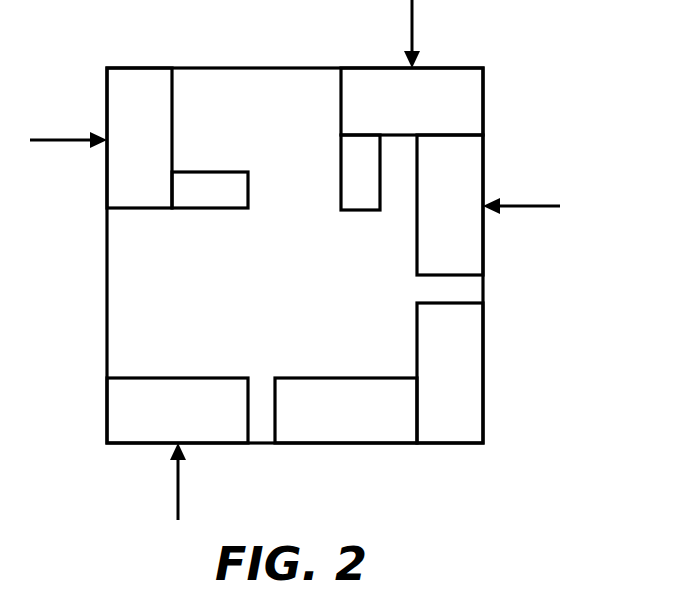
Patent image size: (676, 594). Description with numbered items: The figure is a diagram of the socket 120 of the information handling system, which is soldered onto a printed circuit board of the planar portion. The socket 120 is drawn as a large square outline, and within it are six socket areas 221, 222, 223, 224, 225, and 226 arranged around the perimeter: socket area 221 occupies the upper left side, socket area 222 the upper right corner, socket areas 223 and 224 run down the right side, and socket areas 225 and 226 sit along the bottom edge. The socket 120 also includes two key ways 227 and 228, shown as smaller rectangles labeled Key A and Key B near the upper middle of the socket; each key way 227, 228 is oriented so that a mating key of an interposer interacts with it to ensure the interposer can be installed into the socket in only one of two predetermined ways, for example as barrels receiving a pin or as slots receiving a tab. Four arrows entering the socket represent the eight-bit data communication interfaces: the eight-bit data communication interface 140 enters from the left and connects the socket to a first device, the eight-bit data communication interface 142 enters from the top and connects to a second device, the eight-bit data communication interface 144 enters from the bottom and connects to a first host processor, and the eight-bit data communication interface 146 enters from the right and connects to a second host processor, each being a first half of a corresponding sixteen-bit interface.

The socket 120 is at (281, 275).
The socket area 221 is at (139, 138).
The socket area 222 is at (396, 131).
The socket area 223 is at (450, 205).
The socket area 224 is at (450, 373).
The socket area 225 is at (330, 440).
The socket area 226 is at (162, 440).
The key way 227 is at (228, 172).
The key way 228 is at (341, 148).
The 8-bit data communication interface 140 is at (68, 130).
The 8-bit data communication interface 142 is at (430, 34).
The 8-bit data communication interface 144 is at (160, 481).
The 8-bit data communication interface 146 is at (521, 196).